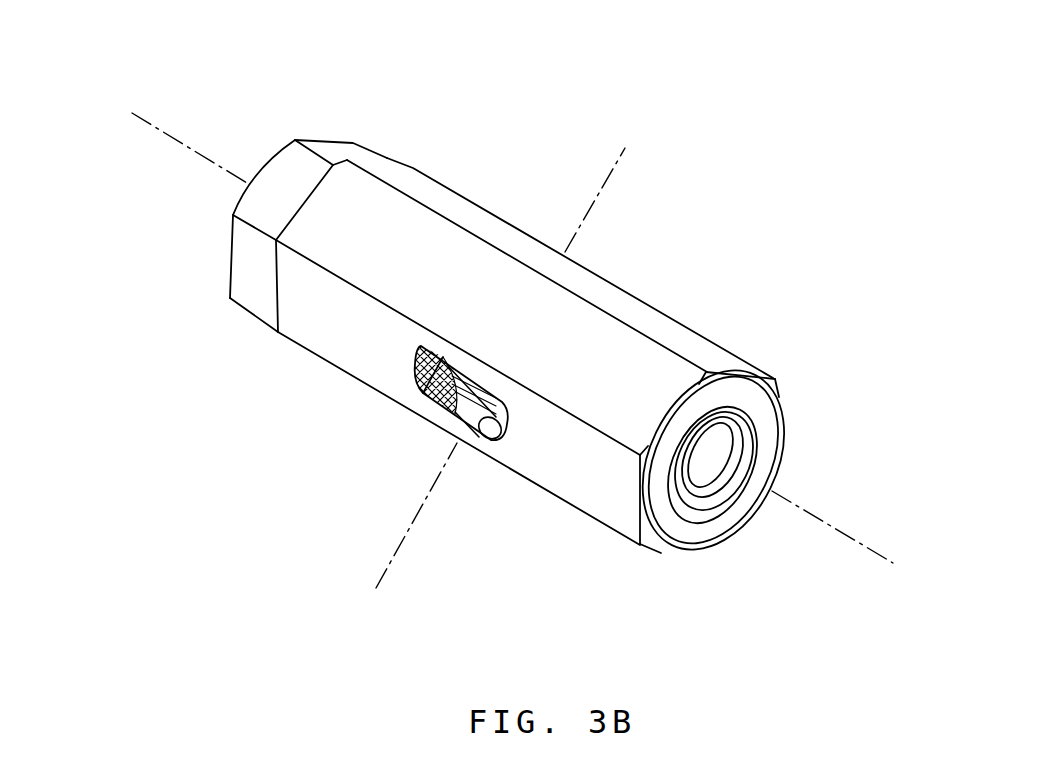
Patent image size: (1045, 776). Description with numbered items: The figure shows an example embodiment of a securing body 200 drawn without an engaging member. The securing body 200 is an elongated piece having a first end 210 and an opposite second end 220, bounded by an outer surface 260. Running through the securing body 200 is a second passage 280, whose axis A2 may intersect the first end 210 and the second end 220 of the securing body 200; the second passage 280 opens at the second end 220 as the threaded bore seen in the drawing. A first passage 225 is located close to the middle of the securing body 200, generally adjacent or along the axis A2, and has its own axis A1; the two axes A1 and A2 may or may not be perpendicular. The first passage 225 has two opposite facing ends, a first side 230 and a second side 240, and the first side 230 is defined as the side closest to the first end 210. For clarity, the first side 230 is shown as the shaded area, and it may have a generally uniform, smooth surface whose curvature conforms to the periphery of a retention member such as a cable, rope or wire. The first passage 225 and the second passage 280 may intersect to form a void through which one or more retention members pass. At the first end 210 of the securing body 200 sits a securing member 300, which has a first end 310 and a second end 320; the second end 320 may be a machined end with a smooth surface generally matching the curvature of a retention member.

The securing body 200 is at (687, 314).
The first end 210 is at (386, 157).
The second end 220 is at (778, 379).
The first passage 225 is at (428, 425).
The first side 230 is at (412, 372).
The second side 240 is at (505, 422).
The outer surface 260 is at (615, 488).
The second passage 280 is at (724, 491).
The securing member 300 is at (235, 317).
The first end 310 is at (229, 236).
The second end 320 is at (433, 417).
The axis A1 is at (516, 352).
The axis A2 is at (533, 358).